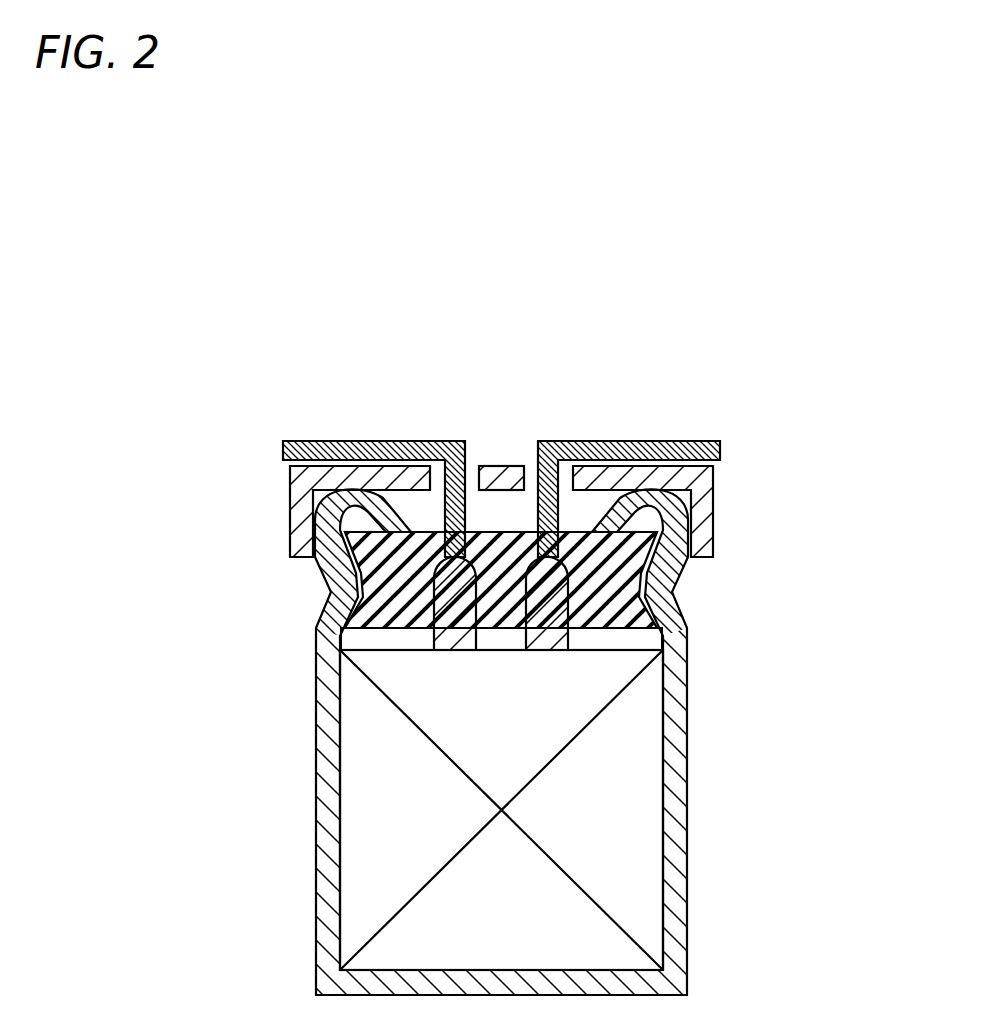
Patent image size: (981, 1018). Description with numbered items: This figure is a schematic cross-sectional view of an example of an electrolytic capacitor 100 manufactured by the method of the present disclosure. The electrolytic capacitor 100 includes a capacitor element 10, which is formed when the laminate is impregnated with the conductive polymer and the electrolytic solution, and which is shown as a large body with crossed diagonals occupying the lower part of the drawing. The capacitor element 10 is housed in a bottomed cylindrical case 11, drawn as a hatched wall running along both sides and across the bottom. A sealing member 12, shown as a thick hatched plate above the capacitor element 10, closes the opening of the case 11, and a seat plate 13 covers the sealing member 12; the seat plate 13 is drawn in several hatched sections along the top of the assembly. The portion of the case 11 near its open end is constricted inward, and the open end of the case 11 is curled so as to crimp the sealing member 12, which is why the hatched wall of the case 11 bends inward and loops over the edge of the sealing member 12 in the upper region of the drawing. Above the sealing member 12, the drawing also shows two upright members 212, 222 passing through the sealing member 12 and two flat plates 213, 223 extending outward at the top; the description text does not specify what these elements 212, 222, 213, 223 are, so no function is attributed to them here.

The electrolytic capacitor 100 is at (221, 356).
The capacitor element 10 is at (385, 783).
The case 11 is at (677, 750).
The sealing member 12 is at (610, 588).
The seat plate 13 is at (498, 464).
The lead terminal 212 is at (453, 592).
The lead terminal 222 is at (545, 617).
The external terminal plate 213 is at (366, 439).
The external terminal plate 223 is at (641, 452).